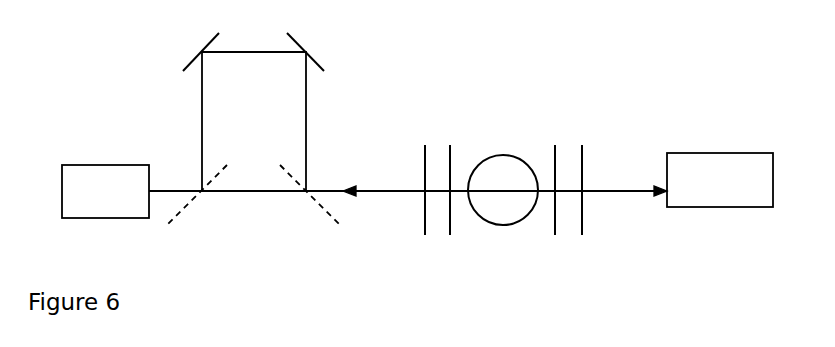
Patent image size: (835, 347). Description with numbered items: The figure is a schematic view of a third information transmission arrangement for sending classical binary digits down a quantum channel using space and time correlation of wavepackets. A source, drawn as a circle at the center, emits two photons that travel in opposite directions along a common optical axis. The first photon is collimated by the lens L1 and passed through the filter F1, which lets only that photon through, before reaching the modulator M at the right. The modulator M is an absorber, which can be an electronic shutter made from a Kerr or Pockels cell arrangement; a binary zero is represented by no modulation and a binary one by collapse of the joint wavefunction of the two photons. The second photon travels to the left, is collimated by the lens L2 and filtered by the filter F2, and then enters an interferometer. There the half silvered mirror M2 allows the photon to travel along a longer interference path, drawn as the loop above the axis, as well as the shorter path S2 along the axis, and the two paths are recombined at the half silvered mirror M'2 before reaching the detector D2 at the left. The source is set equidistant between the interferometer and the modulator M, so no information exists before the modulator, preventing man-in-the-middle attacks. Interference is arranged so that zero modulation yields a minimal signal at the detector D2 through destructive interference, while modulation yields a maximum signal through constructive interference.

The detector D2 is at (105, 191).
The half silvered mirror M'2 is at (182, 170).
The half silvered mirror M2 is at (320, 214).
The shorter path S2 is at (253, 219).
The lens / longer interference path L2 is at (327, 157).
The filter F2 is at (426, 213).
The lens L1 is at (554, 213).
The filter F1 is at (588, 213).
The modulator M is at (720, 180).